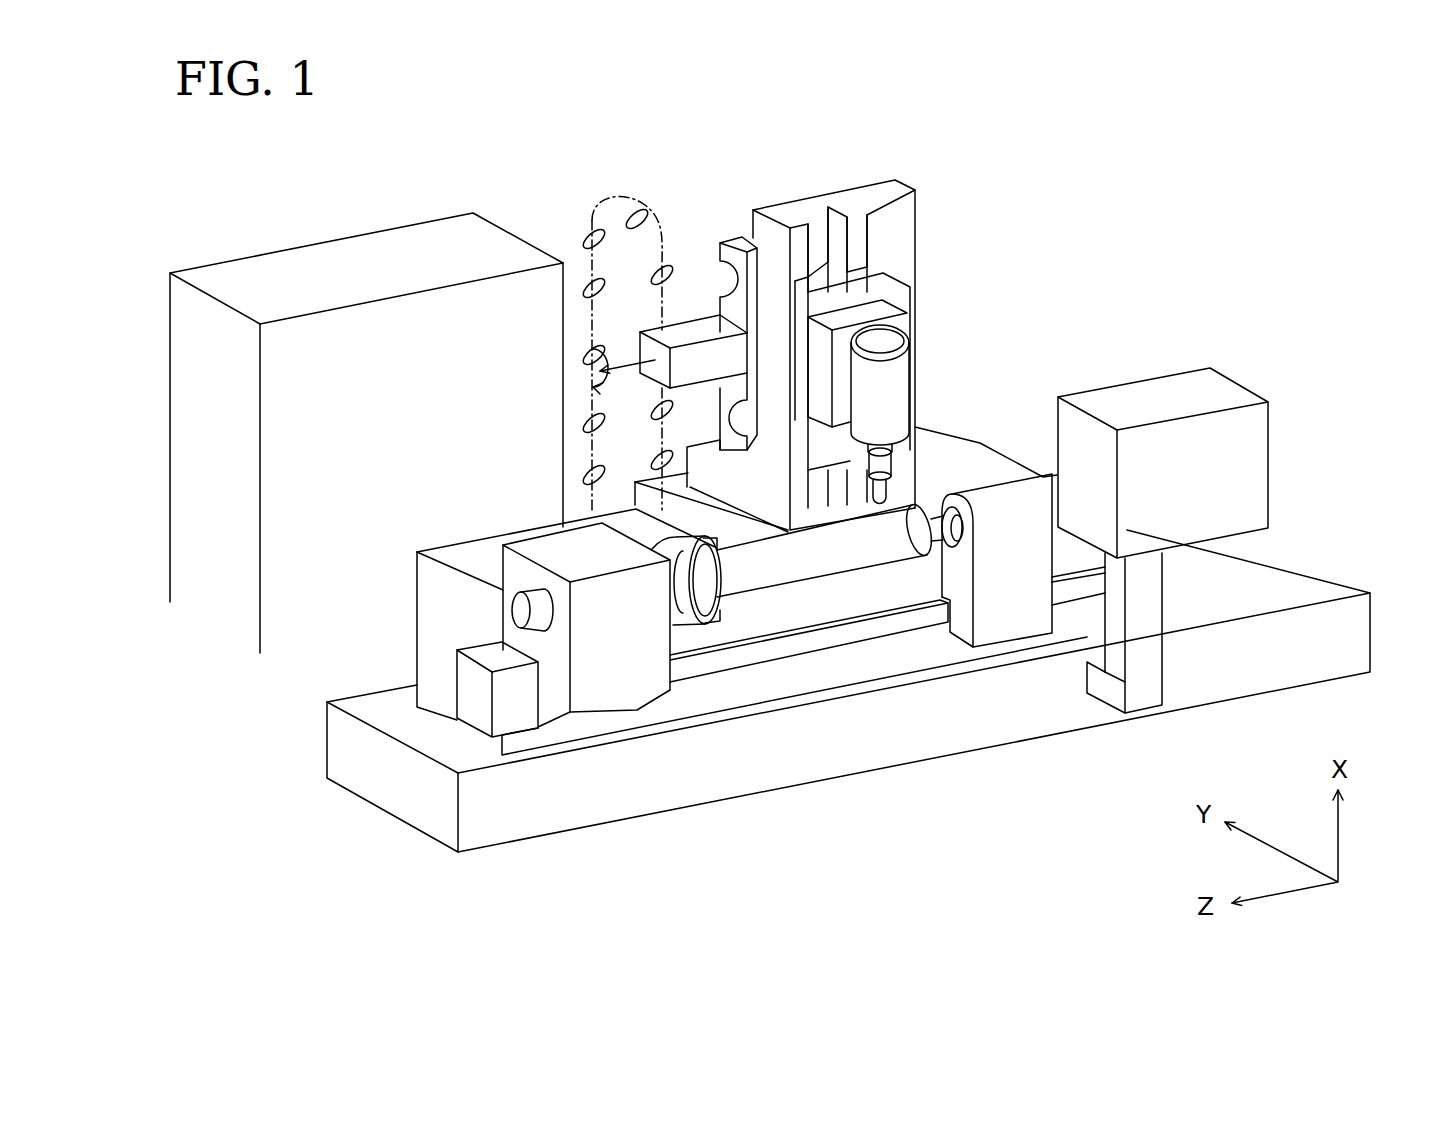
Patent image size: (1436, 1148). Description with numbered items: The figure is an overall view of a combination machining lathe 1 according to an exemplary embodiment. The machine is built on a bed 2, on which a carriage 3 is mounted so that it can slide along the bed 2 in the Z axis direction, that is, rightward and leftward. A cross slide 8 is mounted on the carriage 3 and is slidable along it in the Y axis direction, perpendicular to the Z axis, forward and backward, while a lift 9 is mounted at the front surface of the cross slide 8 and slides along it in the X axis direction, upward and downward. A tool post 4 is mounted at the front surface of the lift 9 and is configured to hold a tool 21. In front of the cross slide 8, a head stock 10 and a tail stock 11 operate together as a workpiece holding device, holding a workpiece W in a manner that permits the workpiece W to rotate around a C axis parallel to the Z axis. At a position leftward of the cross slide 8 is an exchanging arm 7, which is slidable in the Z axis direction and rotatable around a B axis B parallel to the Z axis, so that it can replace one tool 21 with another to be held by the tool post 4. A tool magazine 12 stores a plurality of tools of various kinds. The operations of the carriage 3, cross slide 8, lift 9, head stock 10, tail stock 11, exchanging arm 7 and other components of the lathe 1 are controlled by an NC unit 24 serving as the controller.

The combination machining lathe 1 is at (1047, 187).
The bed 2 is at (1298, 563).
The carriage 3 is at (965, 477).
The tool post 4 is at (895, 378).
The exchanging arm 7 is at (695, 328).
The cross slide 8 is at (900, 215).
The lift 9 is at (898, 268).
The head stock 10 is at (613, 660).
The tail stock 11 is at (1007, 607).
The tool magazine 12 is at (551, 203).
The tool 21 is at (890, 462).
The NC unit 24 is at (1248, 449).
The workpiece W is at (850, 557).
The B axis B is at (624, 386).